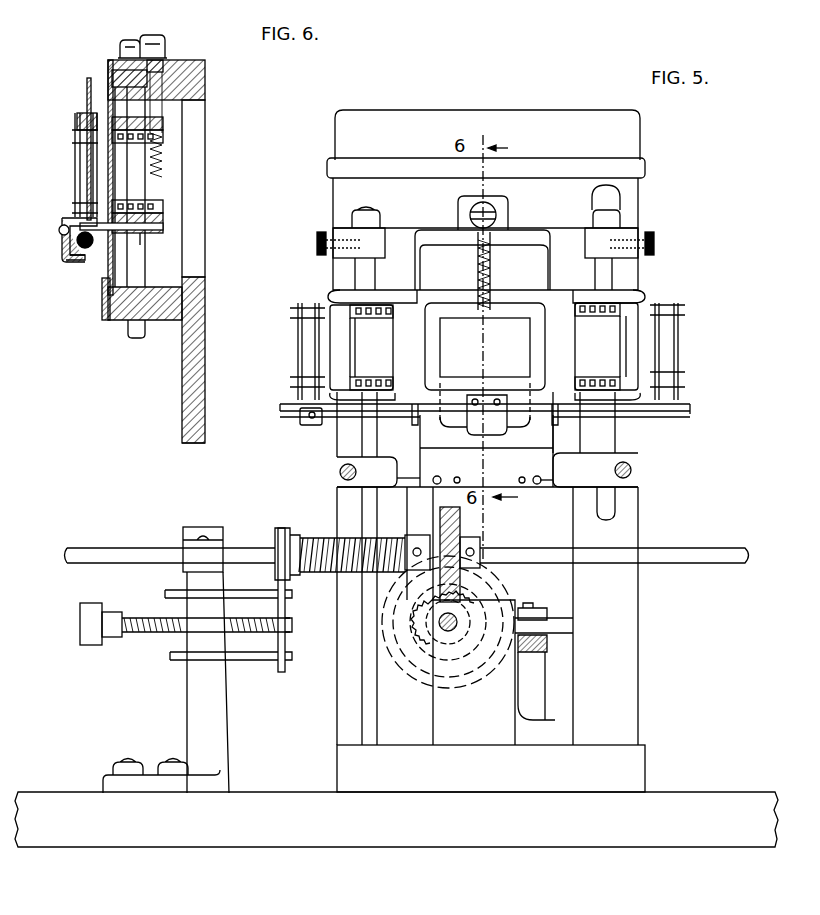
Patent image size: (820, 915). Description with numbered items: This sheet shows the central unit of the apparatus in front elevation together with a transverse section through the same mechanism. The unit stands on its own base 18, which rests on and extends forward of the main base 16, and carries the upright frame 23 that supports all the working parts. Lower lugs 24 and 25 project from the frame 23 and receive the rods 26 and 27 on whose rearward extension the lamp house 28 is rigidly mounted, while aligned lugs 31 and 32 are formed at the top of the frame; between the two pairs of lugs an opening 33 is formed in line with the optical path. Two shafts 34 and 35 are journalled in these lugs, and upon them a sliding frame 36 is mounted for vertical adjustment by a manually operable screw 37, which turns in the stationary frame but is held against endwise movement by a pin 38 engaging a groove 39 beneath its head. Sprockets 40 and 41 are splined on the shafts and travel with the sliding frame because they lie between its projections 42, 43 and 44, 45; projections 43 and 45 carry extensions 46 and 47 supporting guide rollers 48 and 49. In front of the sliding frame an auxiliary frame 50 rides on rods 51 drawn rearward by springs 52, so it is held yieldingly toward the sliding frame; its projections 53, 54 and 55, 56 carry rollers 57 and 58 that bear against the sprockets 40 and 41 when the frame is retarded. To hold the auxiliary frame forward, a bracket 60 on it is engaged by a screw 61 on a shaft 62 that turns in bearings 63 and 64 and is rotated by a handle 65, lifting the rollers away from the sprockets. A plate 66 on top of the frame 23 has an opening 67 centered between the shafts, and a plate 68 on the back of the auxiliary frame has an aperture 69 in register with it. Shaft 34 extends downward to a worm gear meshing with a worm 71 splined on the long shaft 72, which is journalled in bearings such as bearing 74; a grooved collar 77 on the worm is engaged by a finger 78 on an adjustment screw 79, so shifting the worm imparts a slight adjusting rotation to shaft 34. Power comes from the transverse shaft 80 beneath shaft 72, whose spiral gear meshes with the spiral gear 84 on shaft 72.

In FIG. 5, the base 16 is at (157, 838).
In FIG. 5, the base 18 is at (630, 758).
In FIG. 6, the upright frame 23 is at (183, 395).
In FIG. 5, the upright frame 23 is at (630, 661).
In FIG. 5, the lug 24 is at (337, 470).
In FIG. 5, the lug 25 is at (638, 462).
In FIG. 5, the rod 26 is at (342, 478).
In FIG. 5, the rod 27 is at (630, 477).
In FIG. 5, the lamp house 28 is at (638, 190).
In FIG. 5, the lug 31 is at (340, 254).
In FIG. 5, the lug 32 is at (630, 253).
In FIG. 6, the opening 33 is at (192, 167).
In FIG. 6, the shaft 34 is at (131, 333).
In FIG. 5, the shaft 34 is at (292, 303).
In FIG. 5, the shaft 35 is at (605, 272).
In FIG. 6, the sliding frame 36 is at (116, 238).
In FIG. 5, the manually operable screw 37 is at (490, 215).
In FIG. 6, the pin or screw 38 is at (120, 60).
In FIG. 6, the groove 39 is at (186, 60).
In FIG. 5, the sprocket 40 is at (365, 340).
In FIG. 5, the sprocket 41 is at (605, 342).
In FIG. 5, the projection 42 is at (330, 298).
In FIG. 5, the projection 43 is at (300, 402).
In FIG. 5, the projection 44 is at (645, 297).
In FIG. 5, the projection 45 is at (650, 398).
In FIG. 5, the extension 46 is at (285, 413).
In FIG. 5, the extension 47 is at (690, 413).
In FIG. 5, the guide roller 48 is at (300, 368).
In FIG. 5, the guide roller 49 is at (660, 332).
In FIG. 5, the auxiliary frame 50 is at (408, 342).
In FIG. 6, the rod 51 is at (160, 226).
In FIG. 6, the spring 52 is at (152, 233).
In FIG. 5, the projection 53 is at (365, 298).
In FIG. 5, the projection 54 is at (378, 398).
In FIG. 5, the projection 55 is at (590, 298).
In FIG. 5, the projection 56 is at (600, 398).
In FIG. 6, the roller 57 is at (78, 181).
In FIG. 5, the roller 57 is at (345, 333).
In FIG. 5, the roller 58 is at (630, 358).
In FIG. 6, the bracket 60 is at (60, 238).
In FIG. 6, the screw 61 is at (64, 258).
In FIG. 6, the shaft 62 is at (80, 248).
In FIG. 5, the bearing 63 is at (415, 427).
In FIG. 5, the bearing 64 is at (557, 427).
In FIG. 5, the handle 65 is at (312, 425).
In FIG. 6, the plate 66 is at (109, 90).
In FIG. 6, the opening 67 is at (118, 190).
In FIG. 6, the plate 68 is at (86, 90).
In FIG. 6, the aperture 69 is at (76, 165).
In FIG. 5, the worm 71 is at (335, 578).
In FIG. 5, the shaft 72 is at (715, 565).
In FIG. 5, the bearing 74 is at (218, 745).
In FIG. 5, the grooved collar 77 is at (278, 540).
In FIG. 5, the finger 78 is at (282, 640).
In FIG. 5, the adjustment screw 79 is at (155, 618).
In FIG. 5, the shaft 80 is at (445, 624).
In FIG. 5, the spiral gear 84 is at (462, 525).